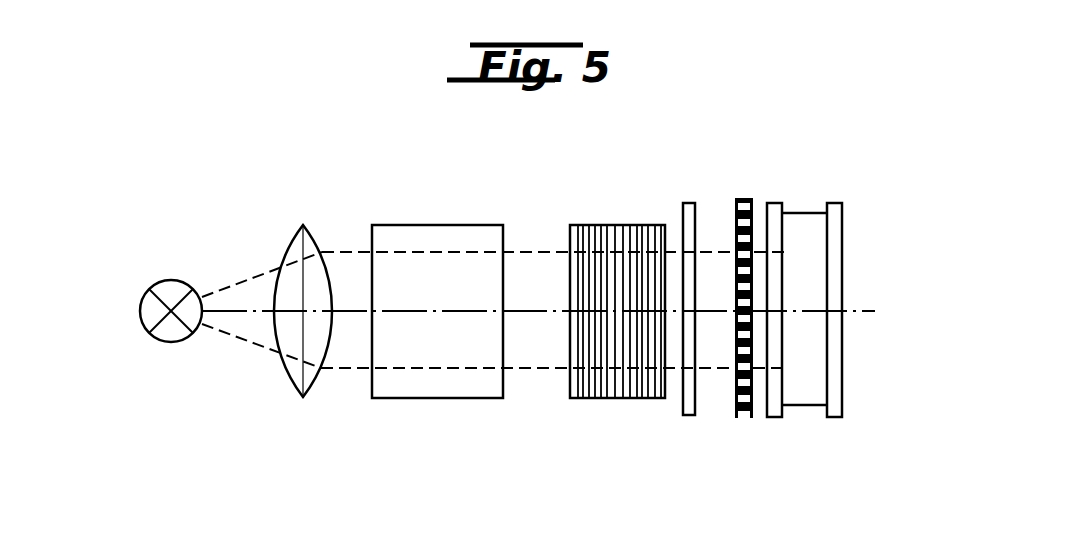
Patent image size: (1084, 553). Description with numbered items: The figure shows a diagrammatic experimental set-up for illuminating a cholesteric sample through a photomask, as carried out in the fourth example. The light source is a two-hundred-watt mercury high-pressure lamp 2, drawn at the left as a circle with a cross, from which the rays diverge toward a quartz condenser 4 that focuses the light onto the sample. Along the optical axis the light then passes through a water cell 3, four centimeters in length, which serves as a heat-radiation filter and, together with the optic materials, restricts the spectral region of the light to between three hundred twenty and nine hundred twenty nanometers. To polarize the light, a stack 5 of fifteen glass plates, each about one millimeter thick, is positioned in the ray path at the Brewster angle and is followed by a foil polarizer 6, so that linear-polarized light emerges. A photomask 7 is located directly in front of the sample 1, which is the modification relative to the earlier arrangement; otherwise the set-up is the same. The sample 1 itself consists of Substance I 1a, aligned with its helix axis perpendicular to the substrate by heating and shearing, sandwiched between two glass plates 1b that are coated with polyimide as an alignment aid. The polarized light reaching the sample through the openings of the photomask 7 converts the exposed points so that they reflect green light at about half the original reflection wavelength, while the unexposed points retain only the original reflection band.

The sample 1 is at (817, 295).
The Substance I 1a is at (808, 390).
The glass plates 1b is at (775, 403).
The mercury high-pressure lamp 2 is at (173, 292).
The water cell 3 is at (427, 238).
The quartz condenser 4 is at (293, 250).
The stack of glass plates 5 is at (610, 238).
The foil polarizer 6 is at (685, 230).
The photomask 7 is at (733, 225).